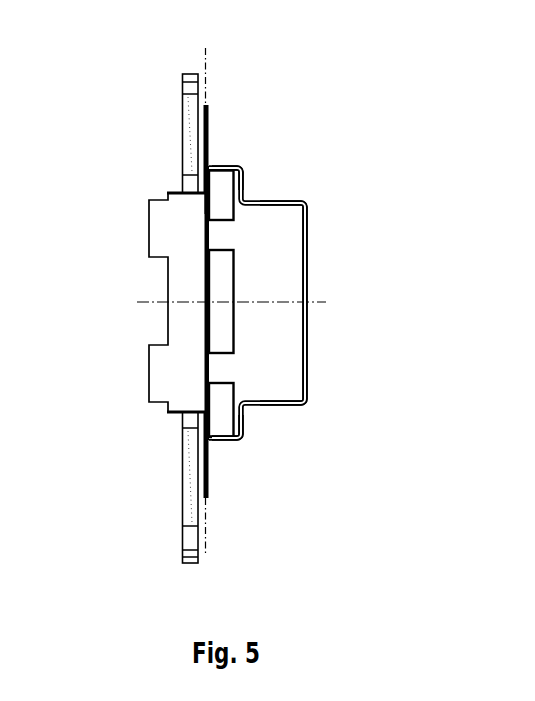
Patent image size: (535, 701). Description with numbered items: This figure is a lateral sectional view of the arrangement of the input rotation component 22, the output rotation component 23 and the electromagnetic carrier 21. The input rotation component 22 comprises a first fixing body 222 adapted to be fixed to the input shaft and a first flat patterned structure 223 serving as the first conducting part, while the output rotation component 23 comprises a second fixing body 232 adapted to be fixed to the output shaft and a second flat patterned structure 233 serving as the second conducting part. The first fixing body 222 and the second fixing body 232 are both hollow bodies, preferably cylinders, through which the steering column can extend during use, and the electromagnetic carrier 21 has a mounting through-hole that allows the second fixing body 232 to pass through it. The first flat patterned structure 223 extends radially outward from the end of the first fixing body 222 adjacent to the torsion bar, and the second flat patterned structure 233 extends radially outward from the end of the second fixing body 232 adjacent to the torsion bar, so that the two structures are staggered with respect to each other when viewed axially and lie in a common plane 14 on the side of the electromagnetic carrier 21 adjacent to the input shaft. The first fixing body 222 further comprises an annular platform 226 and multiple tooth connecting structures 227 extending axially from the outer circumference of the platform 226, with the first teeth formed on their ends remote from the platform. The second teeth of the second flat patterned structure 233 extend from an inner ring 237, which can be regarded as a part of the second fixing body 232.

The common plane 14 is at (207, 50).
The electromagnetic carrier 21 is at (188, 119).
The input rotation component 22 is at (263, 197).
The output rotation component 23 is at (152, 402).
The first fixing body 222 is at (305, 207).
The first flat patterned structure 223 is at (208, 462).
The annular platform 226 is at (252, 167).
The tooth connecting structures 227 is at (226, 442).
The second fixing body 232 is at (172, 191).
The second flat patterned structure 233 is at (207, 112).
The inner ring 237 is at (207, 202).